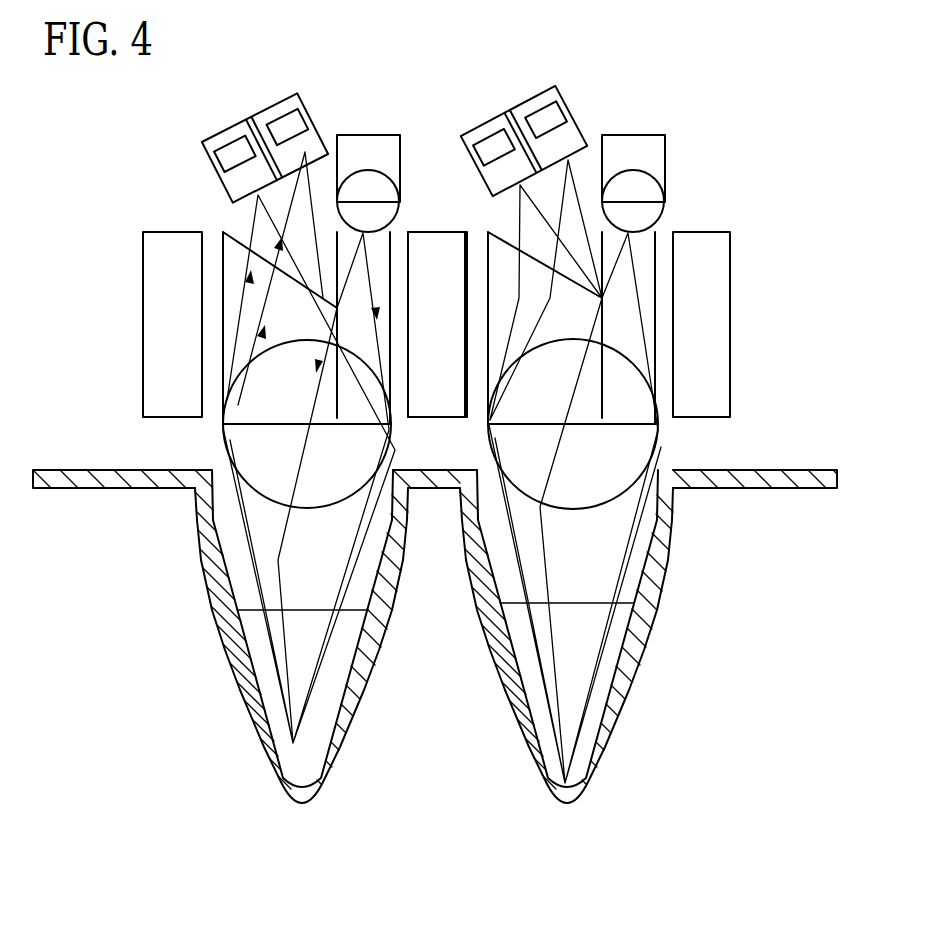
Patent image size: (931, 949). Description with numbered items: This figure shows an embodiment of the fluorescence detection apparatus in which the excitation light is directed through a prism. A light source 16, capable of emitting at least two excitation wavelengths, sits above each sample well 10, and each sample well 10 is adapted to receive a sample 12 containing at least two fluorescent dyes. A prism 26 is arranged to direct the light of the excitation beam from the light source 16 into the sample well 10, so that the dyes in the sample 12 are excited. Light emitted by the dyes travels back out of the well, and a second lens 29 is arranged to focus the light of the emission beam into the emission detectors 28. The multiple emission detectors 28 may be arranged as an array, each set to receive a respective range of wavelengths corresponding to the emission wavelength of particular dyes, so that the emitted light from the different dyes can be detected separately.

The sample well 10 is at (208, 597).
The sample 12 is at (273, 665).
The light source 16 is at (370, 135).
The prism 26 is at (212, 231).
The emission detectors 28 is at (277, 93).
The second lens 29 is at (568, 510).